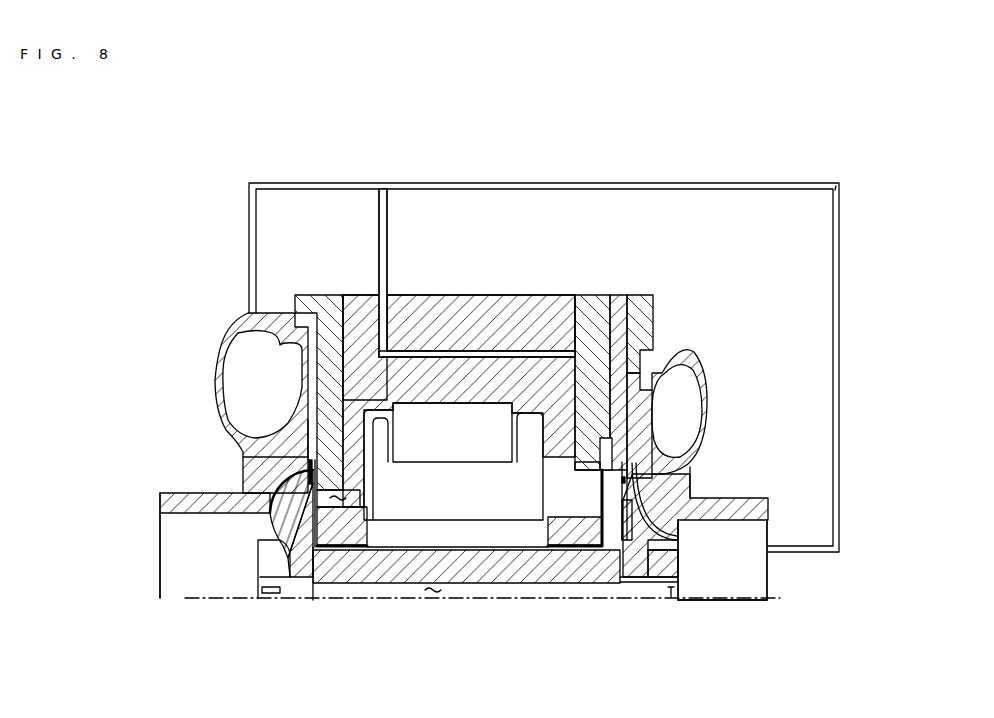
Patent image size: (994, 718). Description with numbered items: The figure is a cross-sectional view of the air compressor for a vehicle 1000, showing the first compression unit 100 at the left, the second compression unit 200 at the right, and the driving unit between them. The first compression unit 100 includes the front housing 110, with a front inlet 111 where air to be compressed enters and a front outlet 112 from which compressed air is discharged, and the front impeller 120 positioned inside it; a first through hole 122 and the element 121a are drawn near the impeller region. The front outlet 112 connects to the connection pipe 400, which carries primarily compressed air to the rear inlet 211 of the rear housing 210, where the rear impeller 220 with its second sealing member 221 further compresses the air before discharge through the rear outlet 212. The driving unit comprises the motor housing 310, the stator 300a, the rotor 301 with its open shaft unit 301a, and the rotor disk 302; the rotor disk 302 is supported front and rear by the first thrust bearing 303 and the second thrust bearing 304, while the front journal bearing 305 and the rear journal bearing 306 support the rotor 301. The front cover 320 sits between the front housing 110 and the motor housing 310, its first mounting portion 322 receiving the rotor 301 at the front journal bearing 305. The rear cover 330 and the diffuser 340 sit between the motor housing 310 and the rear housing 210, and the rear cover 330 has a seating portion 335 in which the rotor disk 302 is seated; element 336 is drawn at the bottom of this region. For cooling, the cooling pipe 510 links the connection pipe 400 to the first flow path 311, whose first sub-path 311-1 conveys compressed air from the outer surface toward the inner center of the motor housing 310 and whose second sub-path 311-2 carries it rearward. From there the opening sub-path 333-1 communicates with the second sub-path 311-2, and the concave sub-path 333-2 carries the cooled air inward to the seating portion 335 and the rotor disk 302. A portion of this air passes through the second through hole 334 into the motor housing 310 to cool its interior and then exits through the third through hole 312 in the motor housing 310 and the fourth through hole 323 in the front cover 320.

The air compressor for vehicle 1000 is at (790, 136).
The connection pipe 400 is at (501, 183).
The cooling pipe 510 is at (383, 212).
The first flow path 311 is at (484, 224).
The 1-1-th flow path 311-1 is at (412, 295).
The 1-2-th flow path 311-2 is at (485, 295).
The front cover 320 is at (318, 292).
The motor housing 310 is at (575, 292).
The rear cover 330 is at (602, 292).
The diffuser 340 is at (628, 292).
The 2-1-th flow path 333-1 is at (640, 318).
The 2-2-th flow path 333-2 is at (702, 367).
The rear outlet 212 is at (682, 397).
The second sealing member 221 is at (667, 463).
The rear inlet 211 is at (768, 565).
The front outlet 112 is at (252, 392).
The third through hole 312 is at (303, 438).
The first through hole 122 is at (300, 470).
The stopper 121a is at (309, 473).
The front housing 110 is at (165, 500).
The front impeller 120 is at (160, 543).
The first compression unit 100 is at (92, 498).
The front inlet 111 is at (230, 587).
The fourth through hole 323 is at (300, 530).
The first mounting portion 322 is at (340, 525).
The front journal bearing 305 is at (362, 530).
The rotor 301 is at (412, 567).
The open shaft unit 301a is at (425, 592).
The stator 300a is at (467, 505).
The second through hole 334 is at (555, 512).
The support bottom 336 is at (582, 525).
The seating portion 335 is at (600, 475).
The rear journal bearing 306 is at (590, 530).
The first thrust bearing 303 is at (628, 525).
The rotor disk 302 is at (625, 485).
The second thrust bearing 304 is at (648, 540).
The rear housing 210 is at (727, 518).
The rear impeller 220 is at (760, 570).
The second compression unit 200 is at (772, 652).